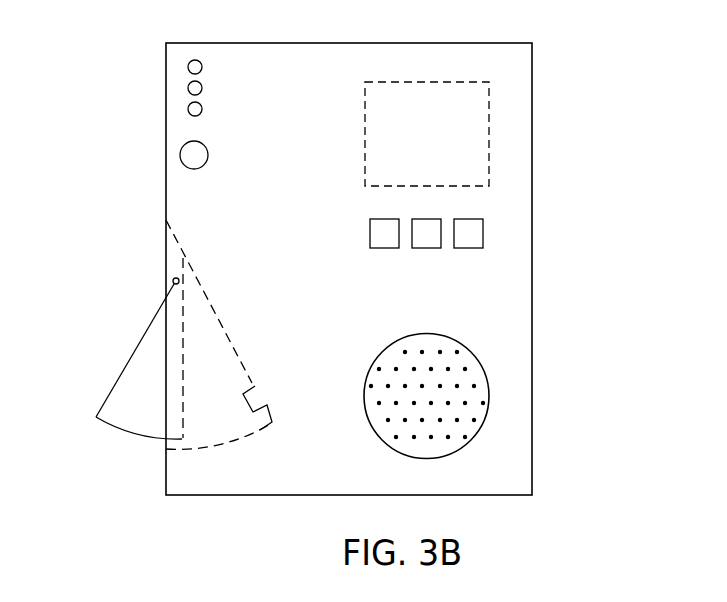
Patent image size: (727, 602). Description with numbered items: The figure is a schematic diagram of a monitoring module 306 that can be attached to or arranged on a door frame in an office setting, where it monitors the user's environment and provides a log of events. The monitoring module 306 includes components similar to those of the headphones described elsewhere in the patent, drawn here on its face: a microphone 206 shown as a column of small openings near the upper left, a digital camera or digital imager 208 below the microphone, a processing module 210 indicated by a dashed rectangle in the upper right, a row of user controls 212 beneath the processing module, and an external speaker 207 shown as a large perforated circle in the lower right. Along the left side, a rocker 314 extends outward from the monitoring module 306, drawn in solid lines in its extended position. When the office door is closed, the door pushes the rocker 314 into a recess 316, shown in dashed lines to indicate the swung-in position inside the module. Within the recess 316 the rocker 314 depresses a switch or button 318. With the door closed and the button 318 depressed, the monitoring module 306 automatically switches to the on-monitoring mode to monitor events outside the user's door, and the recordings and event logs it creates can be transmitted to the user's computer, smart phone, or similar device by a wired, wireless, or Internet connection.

The monitoring module 306 is at (552, 67).
The microphone 206 is at (200, 89).
The digital camera or digital imager 208 is at (208, 152).
The processing module 210 is at (475, 113).
The control buttons 212 is at (475, 231).
The external speaker 207 is at (475, 435).
The rocker 314 is at (135, 382).
The recess 316 is at (217, 423).
The switch or button 318 is at (256, 397).